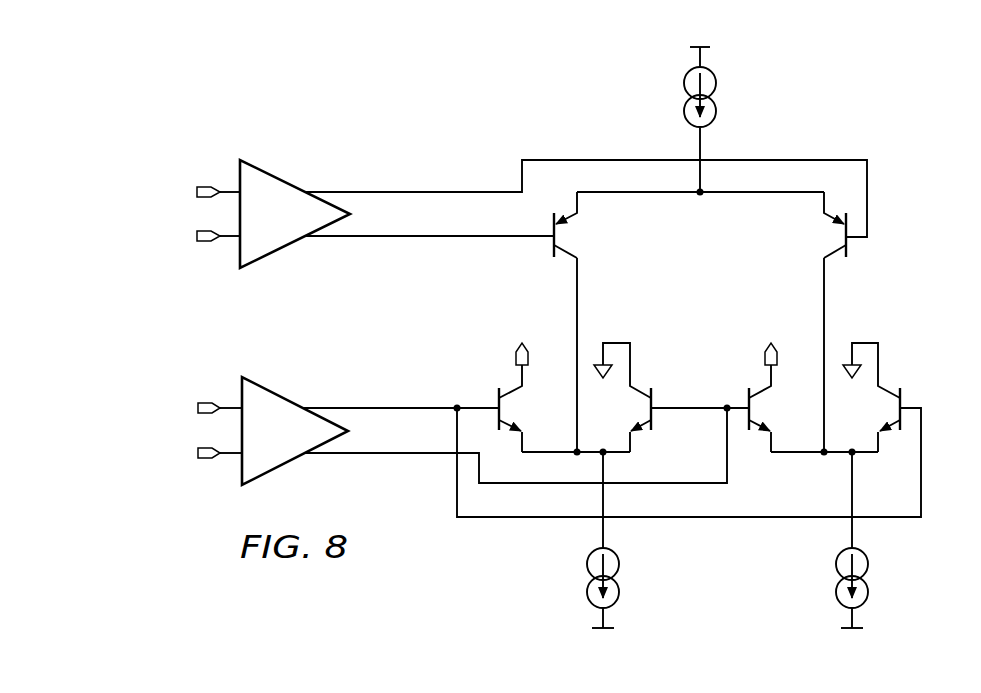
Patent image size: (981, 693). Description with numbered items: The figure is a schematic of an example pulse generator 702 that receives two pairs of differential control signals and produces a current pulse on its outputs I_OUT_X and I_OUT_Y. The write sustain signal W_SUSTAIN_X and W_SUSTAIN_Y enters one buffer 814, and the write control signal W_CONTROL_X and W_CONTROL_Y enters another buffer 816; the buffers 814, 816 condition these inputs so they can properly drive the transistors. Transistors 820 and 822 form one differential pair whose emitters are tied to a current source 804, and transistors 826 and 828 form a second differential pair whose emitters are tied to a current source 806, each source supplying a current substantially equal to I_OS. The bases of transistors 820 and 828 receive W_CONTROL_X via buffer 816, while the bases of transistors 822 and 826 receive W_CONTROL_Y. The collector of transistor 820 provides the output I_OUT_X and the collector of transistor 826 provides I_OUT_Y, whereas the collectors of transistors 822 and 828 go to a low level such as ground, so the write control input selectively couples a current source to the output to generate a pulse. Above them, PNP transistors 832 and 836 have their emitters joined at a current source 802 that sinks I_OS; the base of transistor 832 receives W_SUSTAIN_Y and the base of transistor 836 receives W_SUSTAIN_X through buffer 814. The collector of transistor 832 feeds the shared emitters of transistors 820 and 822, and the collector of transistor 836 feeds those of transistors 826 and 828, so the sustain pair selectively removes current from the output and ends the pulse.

The pulse generator 702 is at (440, 113).
The current source 802 is at (683, 83).
The current source 804 is at (588, 592).
The current source 806 is at (837, 592).
The buffer 814 is at (276, 176).
The buffer 816 is at (275, 392).
The transistor 820 is at (497, 402).
The transistor 822 is at (653, 416).
The transistor 826 is at (747, 402).
The transistor 828 is at (902, 404).
The transistor 832 is at (552, 243).
The transistor 836 is at (848, 240).